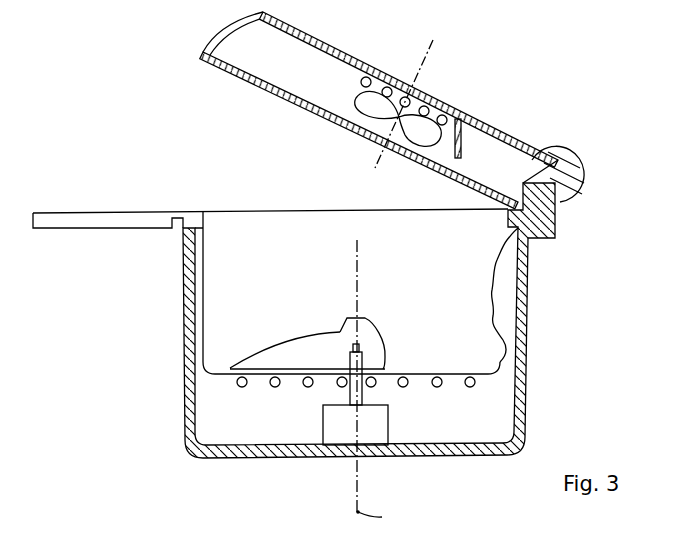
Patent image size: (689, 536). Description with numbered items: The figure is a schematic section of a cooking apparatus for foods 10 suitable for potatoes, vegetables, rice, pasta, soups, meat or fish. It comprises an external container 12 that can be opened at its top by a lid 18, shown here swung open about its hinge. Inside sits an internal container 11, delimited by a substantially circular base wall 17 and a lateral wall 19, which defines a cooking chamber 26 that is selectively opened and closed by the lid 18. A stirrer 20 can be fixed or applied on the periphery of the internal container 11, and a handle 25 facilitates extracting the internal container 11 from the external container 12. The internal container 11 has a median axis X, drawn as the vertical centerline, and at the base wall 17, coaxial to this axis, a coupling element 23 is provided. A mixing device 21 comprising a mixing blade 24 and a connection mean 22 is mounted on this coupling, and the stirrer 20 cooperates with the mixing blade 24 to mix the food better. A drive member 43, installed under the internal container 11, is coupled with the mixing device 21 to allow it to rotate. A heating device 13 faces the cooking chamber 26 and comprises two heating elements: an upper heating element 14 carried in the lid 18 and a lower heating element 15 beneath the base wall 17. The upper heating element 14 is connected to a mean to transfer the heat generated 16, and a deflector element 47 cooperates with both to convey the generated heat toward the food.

The cooking apparatus for foods 10 is at (134, 136).
The internal container 11 is at (514, 362).
The external container 12 is at (521, 329).
The heating device 13 is at (372, 62).
The upper heating element 14 is at (434, 97).
The lower heating element 15 is at (266, 396).
The mean to transfer the heat generated 16 is at (377, 81).
The base wall 17 is at (427, 372).
The lid 18 is at (392, 109).
The lateral wall 19 is at (205, 303).
The stirrer 20 is at (493, 290).
The mixing device 21 is at (330, 334).
The connection mean 22 is at (373, 351).
The coupling element 23 is at (354, 345).
The mixing blade 24 is at (273, 358).
The handle 25 is at (102, 221).
The cooking chamber 26 is at (242, 237).
The drive member 43 is at (338, 433).
The deflector element 47 is at (460, 135).